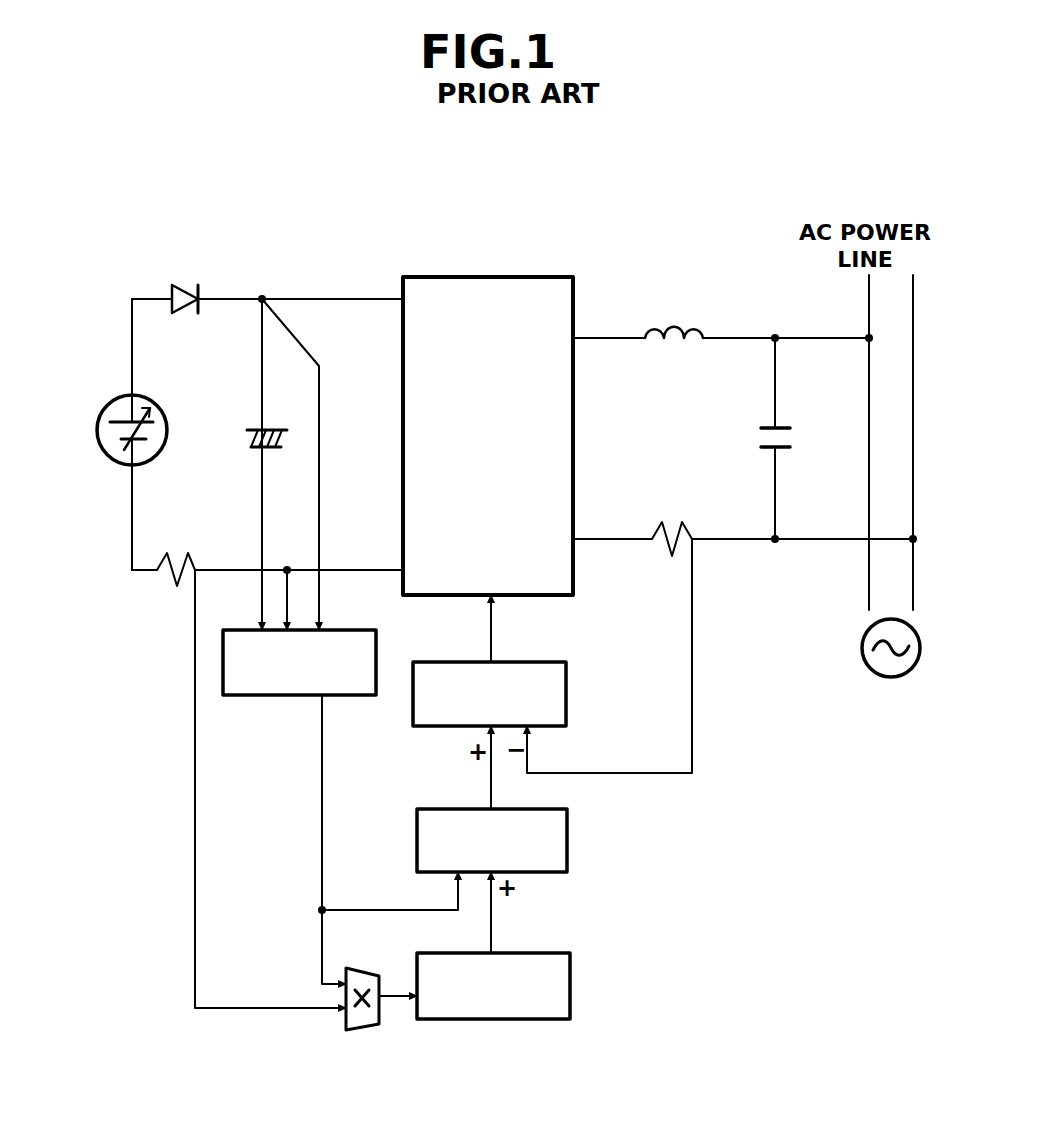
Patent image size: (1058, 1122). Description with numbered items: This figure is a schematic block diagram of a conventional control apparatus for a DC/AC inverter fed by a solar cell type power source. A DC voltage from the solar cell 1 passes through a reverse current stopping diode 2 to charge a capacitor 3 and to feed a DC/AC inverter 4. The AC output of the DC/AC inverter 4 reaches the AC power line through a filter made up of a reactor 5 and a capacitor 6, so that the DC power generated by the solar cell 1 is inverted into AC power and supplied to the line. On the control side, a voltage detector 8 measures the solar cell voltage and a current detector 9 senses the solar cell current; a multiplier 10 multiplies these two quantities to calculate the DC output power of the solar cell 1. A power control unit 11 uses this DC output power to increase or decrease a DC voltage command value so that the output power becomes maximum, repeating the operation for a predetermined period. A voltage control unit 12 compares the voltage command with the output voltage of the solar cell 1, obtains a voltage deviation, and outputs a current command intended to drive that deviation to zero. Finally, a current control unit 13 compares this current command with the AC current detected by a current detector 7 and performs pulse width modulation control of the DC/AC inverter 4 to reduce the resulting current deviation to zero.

The solar cell 1 is at (140, 403).
The reverse current stopping diode 2 is at (190, 282).
The capacitor 3 is at (246, 452).
The DC/AC inverter 4 is at (520, 277).
The reactor 5 is at (684, 328).
The capacitor 6 is at (797, 437).
The current detector 7 is at (688, 526).
The voltage detector 8 is at (346, 630).
The current detector 9 is at (192, 556).
The multiplier 10 is at (364, 1030).
The power control unit 11 is at (570, 978).
The voltage control unit 12 is at (567, 826).
The current control unit 13 is at (530, 662).